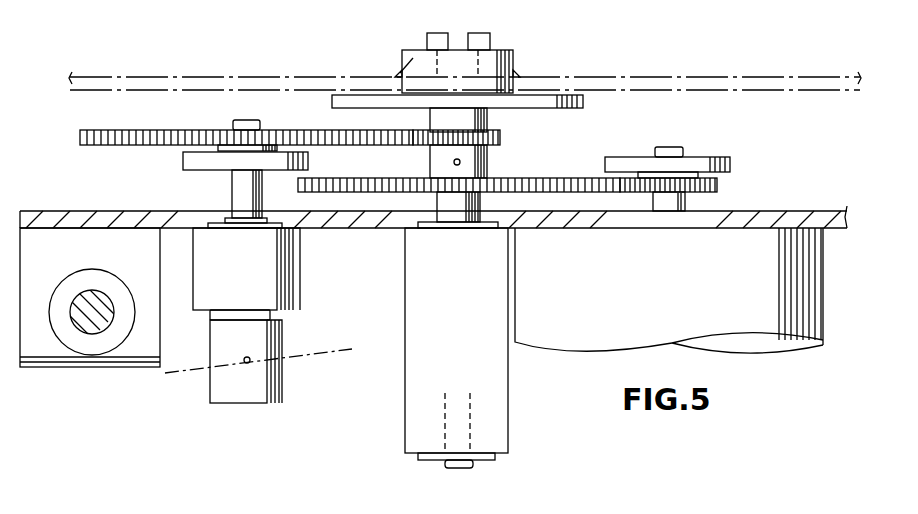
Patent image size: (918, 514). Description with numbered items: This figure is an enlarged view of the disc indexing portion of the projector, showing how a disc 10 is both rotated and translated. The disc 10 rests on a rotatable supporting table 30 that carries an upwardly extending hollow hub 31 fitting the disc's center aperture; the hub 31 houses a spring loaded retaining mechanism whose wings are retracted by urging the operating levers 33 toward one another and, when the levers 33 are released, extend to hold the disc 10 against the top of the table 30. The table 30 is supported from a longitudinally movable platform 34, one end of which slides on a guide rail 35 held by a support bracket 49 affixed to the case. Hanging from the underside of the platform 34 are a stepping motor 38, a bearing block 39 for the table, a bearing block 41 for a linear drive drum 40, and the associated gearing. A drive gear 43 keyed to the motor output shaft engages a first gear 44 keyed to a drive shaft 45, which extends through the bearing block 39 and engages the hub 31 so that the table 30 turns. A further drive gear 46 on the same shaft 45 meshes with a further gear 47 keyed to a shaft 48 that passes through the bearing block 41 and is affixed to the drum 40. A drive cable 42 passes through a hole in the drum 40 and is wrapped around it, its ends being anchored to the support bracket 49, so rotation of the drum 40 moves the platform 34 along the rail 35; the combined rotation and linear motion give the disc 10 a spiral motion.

The disc 10 is at (690, 77).
The rotatable supporting table 30 is at (583, 100).
The hollow hub 31 is at (482, 68).
The operating levers 33 is at (478, 33).
The longitudinally movable platform 34 is at (800, 210).
The guide rail 35 is at (78, 322).
The stepping motor 38 is at (668, 294).
The bearing block 39 is at (462, 307).
The linear drive drum 40 is at (233, 395).
The bearing block 41 is at (246, 272).
The drive cable 42 is at (330, 350).
The drive gear 43 is at (720, 185).
The first gear 44 is at (518, 178).
The drive shaft 45 is at (470, 418).
The further drive gear 46 is at (503, 138).
The further gear 47 is at (155, 130).
The shaft 48 is at (238, 190).
The support bracket 49 is at (80, 254).